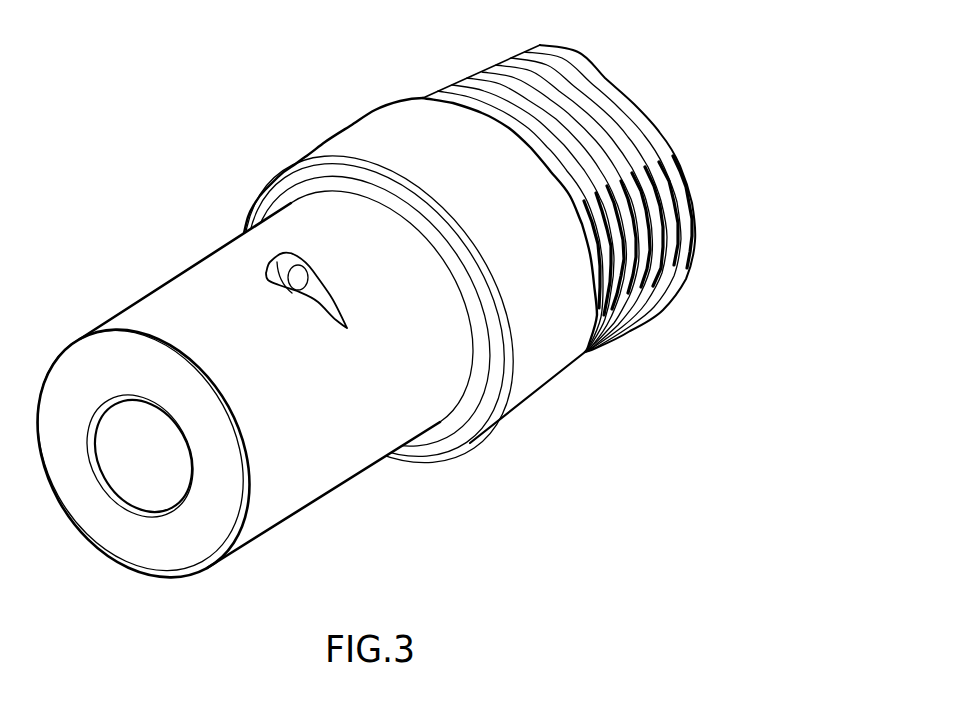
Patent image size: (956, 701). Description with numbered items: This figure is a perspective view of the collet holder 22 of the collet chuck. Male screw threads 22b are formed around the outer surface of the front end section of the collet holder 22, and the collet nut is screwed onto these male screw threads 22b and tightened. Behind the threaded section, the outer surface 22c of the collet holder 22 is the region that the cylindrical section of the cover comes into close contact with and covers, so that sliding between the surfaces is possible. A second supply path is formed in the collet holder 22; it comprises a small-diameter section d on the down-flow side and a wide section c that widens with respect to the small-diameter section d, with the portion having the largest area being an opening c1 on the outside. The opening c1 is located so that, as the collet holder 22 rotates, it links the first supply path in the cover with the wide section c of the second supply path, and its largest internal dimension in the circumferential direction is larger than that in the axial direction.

The collet holder 22 is at (289, 104).
The male screw threads 22b is at (490, 83).
The outer surface 22c is at (188, 283).
The wide section c is at (323, 300).
The opening c1 is at (272, 260).
The small-diameter section d is at (301, 283).